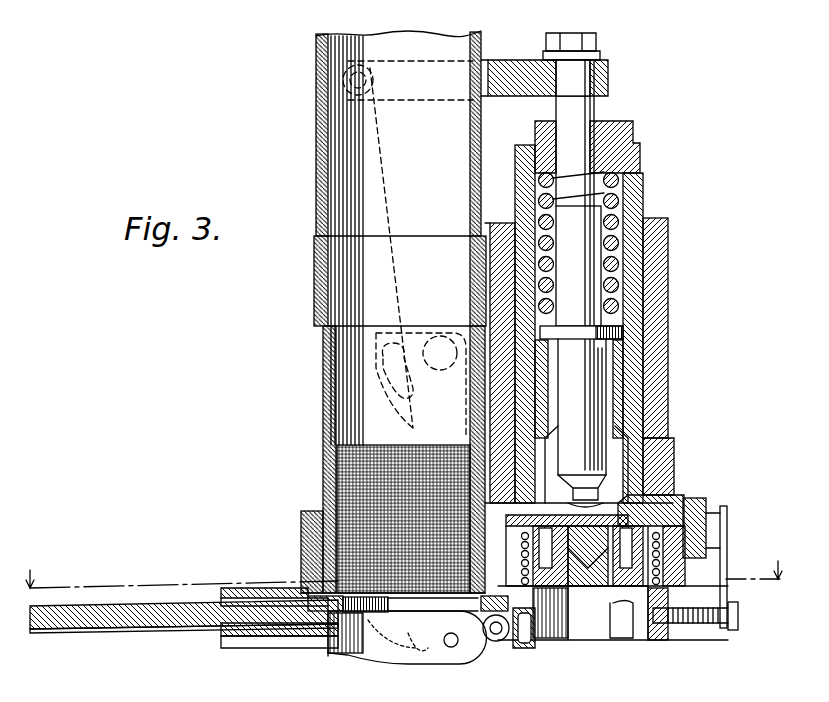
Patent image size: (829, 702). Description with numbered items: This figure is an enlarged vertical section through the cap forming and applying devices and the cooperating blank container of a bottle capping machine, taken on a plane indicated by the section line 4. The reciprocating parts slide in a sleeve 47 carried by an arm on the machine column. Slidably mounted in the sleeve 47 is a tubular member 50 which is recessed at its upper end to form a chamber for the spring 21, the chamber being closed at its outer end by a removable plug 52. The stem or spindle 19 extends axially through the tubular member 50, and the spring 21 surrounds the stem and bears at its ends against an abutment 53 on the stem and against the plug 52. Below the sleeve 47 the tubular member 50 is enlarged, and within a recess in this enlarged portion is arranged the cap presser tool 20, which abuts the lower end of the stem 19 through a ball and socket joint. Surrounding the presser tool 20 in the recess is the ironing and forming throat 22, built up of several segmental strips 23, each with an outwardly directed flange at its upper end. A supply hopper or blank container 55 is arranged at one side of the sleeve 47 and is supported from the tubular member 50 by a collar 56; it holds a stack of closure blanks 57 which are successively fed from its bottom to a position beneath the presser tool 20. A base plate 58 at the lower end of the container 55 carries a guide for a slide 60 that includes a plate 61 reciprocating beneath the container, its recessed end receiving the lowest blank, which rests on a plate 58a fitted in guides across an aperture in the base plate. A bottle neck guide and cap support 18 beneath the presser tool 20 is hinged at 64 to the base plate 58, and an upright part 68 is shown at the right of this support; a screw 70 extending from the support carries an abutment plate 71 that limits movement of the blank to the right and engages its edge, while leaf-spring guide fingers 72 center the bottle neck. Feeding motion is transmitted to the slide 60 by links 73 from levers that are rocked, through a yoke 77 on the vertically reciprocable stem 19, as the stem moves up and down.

The section line 4- 4 is at (38, 560).
The bottle neck guide 18 is at (566, 622).
The stem 19 is at (602, 452).
The cap presser tool 20 is at (596, 550).
The spring 21 is at (606, 216).
The ironing and forming throat 22 is at (666, 470).
The segmental strips 23 is at (700, 520).
The sleeve 47 is at (662, 390).
The tubular member 50 is at (602, 380).
The plug 52 is at (613, 120).
The abutment 53 is at (618, 322).
The blank container 55 is at (316, 398).
The collar 56 is at (698, 496).
The closure blanks 57 is at (345, 476).
The base plate 58 is at (178, 603).
The plate 58a is at (387, 590).
The slide 60 is at (292, 620).
The plate 61 is at (310, 580).
The hinge 64 is at (490, 633).
The bar 68 is at (719, 548).
The screw 70 is at (732, 606).
The abutment plate 71 is at (668, 618).
The guide fingers 72 is at (614, 632).
The links 73 is at (416, 634).
The yoke 77 is at (492, 56).